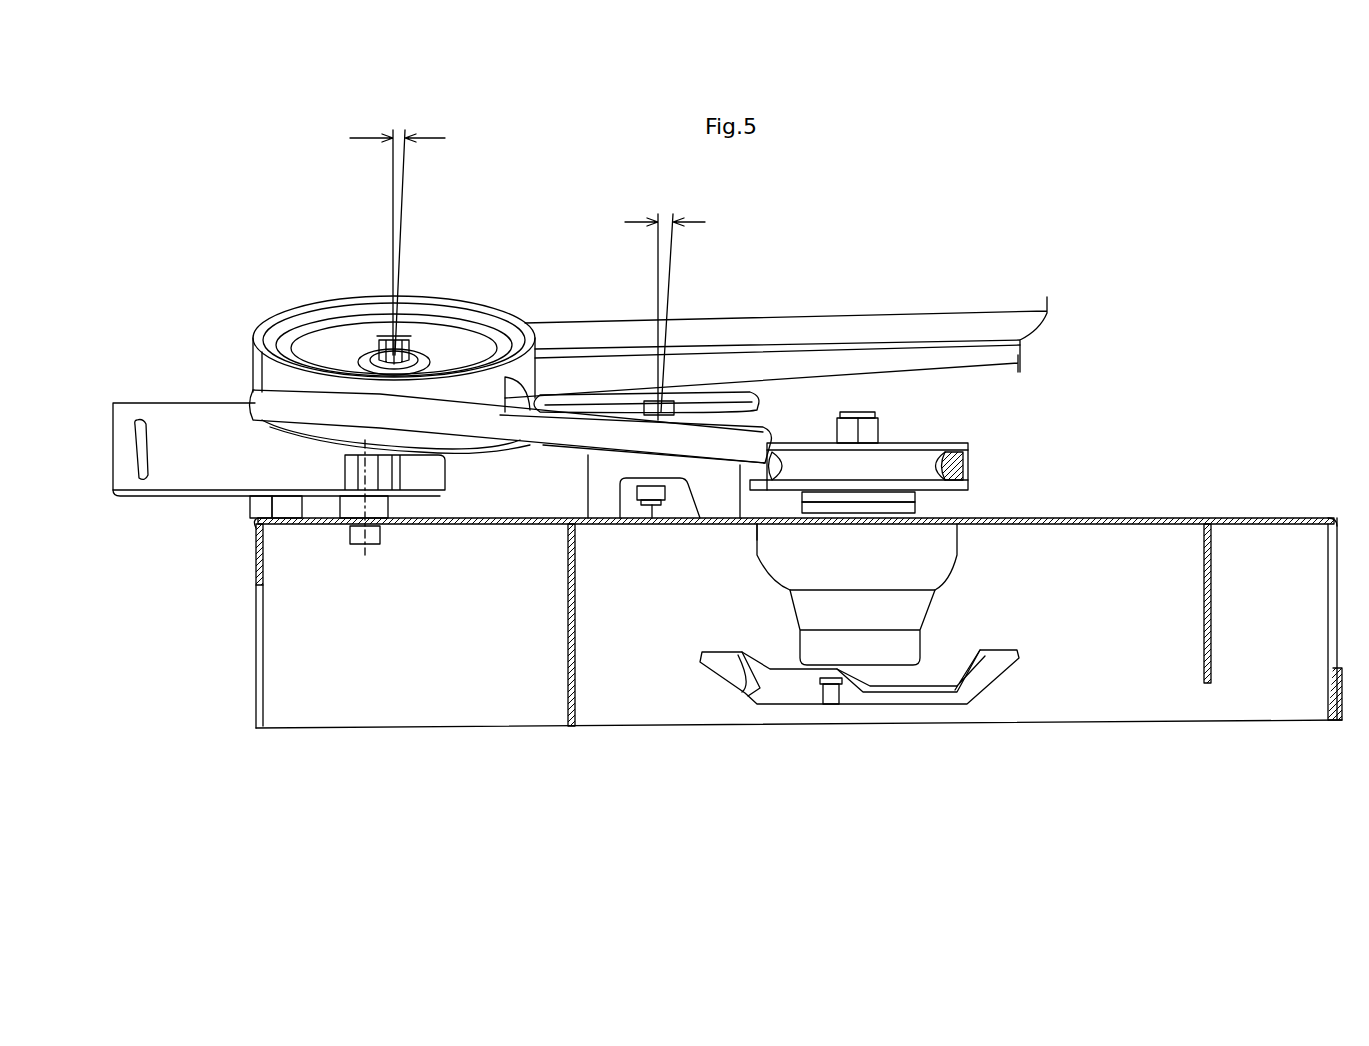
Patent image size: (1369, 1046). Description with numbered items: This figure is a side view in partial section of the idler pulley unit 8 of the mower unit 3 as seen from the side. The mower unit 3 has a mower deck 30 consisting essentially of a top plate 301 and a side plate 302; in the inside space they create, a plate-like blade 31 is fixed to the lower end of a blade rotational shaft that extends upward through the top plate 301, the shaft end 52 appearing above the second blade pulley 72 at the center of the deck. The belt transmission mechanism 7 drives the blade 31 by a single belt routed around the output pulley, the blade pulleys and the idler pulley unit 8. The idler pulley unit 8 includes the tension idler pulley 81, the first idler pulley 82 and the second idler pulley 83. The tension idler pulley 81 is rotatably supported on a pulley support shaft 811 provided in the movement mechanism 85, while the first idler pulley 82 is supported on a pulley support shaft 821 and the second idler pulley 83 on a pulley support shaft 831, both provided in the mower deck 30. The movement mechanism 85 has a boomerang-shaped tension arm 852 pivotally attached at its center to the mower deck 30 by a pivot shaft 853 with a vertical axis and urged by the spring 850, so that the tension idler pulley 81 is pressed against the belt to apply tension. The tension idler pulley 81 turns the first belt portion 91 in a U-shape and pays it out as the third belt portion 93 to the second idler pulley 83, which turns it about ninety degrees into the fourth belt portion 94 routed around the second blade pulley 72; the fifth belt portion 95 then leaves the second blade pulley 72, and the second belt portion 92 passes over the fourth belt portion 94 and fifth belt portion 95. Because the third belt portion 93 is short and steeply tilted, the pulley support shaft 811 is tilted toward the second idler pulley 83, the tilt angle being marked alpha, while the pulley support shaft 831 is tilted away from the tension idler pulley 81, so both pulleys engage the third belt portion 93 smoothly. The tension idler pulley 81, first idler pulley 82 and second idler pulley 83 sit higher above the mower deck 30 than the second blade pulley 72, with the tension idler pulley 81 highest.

The mower unit 3 is at (1128, 254).
The mower deck 30 is at (1231, 512).
The top plate 301 is at (1156, 516).
The side plate 302 is at (1330, 605).
The blade 31 is at (790, 692).
The blade shaft nut (blade shaft unit 50) 52 is at (870, 412).
The second blade pulley 72 is at (935, 442).
The belt transmission mechanism 7 is at (922, 302).
The first belt portion 91 is at (850, 333).
The second belt portion 92 is at (766, 360).
The third belt portion 93 is at (517, 428).
The fourth belt portion 94 is at (747, 476).
The fifth belt portion 95 is at (962, 460).
The idler pulley unit 8 is at (322, 292).
The tension idler pulley 81 is at (365, 300).
The pulley support shaft 811 is at (404, 302).
The first idler pulley 82 is at (720, 388).
The pulley support shaft 821 is at (625, 408).
The second idler pulley 83 is at (745, 420).
The pulley support shaft 831 is at (642, 500).
The movement mechanism 85 is at (225, 510).
The spring 850 is at (147, 420).
The tension arm 852 is at (175, 497).
The pivot shaft 853 is at (378, 500).